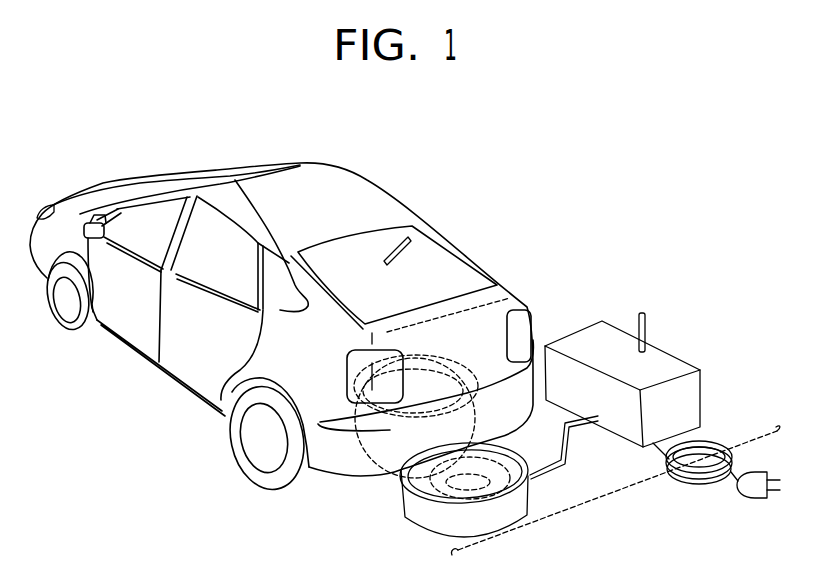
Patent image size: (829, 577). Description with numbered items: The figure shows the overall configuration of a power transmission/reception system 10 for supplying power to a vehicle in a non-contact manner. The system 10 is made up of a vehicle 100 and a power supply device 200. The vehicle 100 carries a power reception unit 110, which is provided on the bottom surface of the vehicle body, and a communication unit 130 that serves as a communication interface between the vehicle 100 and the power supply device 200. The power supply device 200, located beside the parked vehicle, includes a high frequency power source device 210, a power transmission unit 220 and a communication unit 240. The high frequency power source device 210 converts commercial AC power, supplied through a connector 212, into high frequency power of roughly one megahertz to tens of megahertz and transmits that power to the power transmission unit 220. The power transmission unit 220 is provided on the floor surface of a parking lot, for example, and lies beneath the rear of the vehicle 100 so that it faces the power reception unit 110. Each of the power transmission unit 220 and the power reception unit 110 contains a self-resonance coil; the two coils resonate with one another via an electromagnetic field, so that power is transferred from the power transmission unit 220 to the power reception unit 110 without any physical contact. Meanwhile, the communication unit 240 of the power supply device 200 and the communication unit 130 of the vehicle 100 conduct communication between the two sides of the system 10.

The power transmission/reception system 10 is at (62, 105).
The vehicle 100 is at (281, 324).
The power reception unit 110 is at (395, 438).
The communication unit 130 is at (412, 253).
The power supply device 200 is at (621, 490).
The high frequency power source device 210 is at (704, 385).
The connector 212 is at (757, 500).
The power transmission unit 220 is at (530, 490).
The communication unit 240 is at (649, 329).